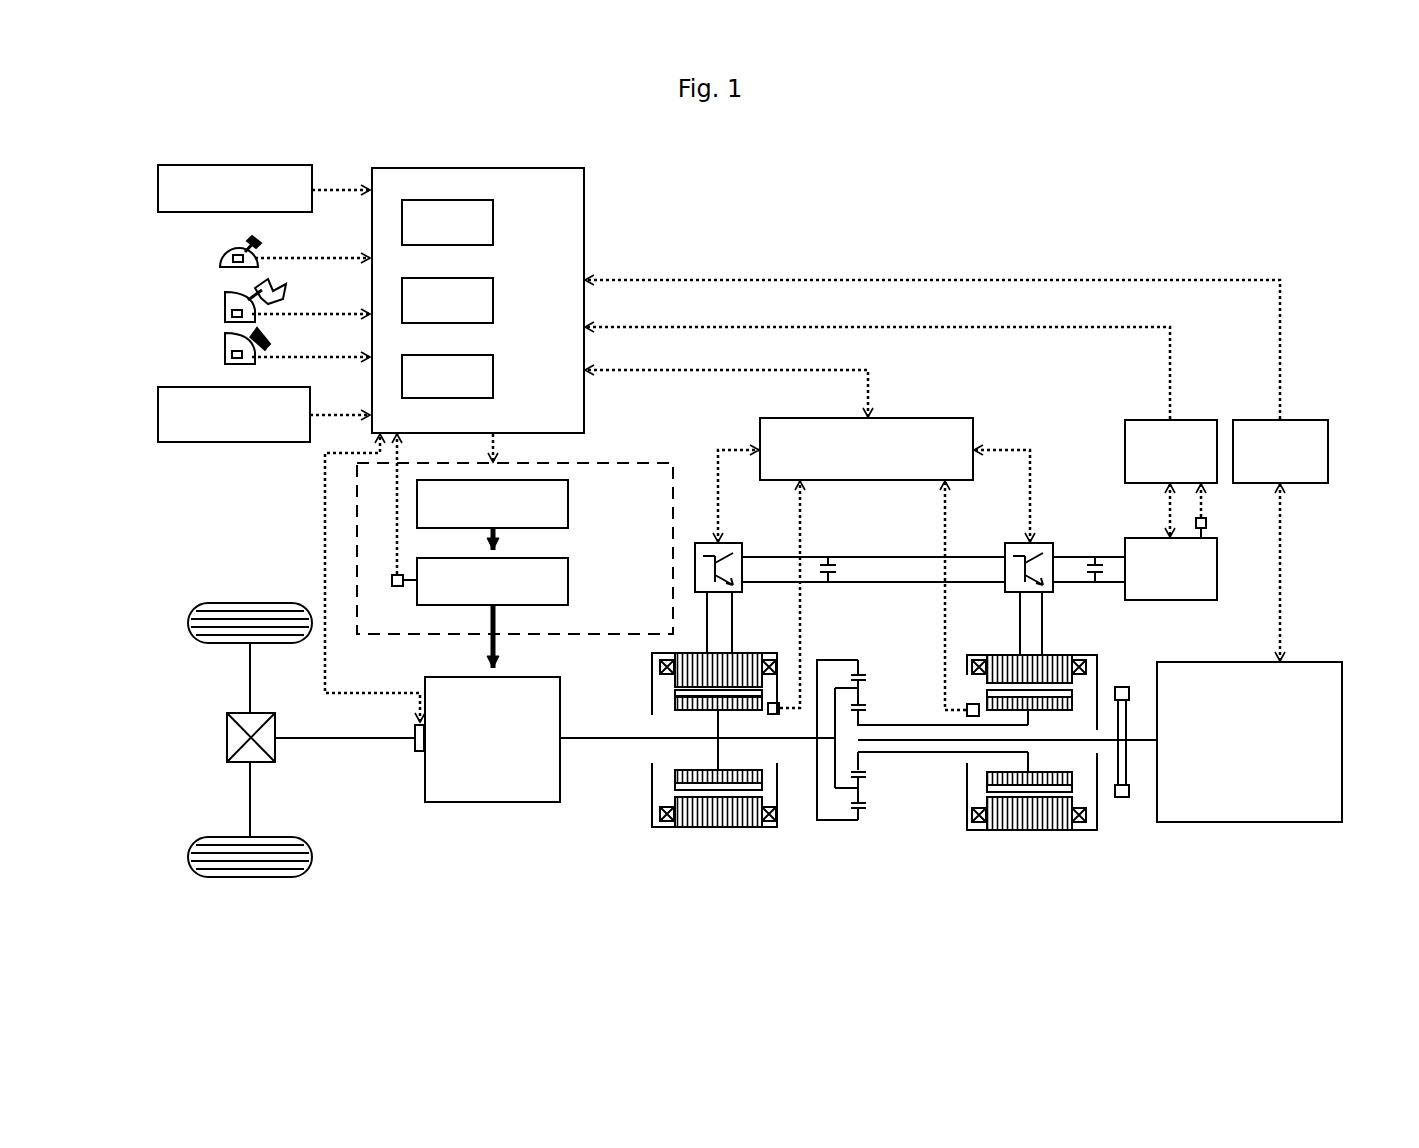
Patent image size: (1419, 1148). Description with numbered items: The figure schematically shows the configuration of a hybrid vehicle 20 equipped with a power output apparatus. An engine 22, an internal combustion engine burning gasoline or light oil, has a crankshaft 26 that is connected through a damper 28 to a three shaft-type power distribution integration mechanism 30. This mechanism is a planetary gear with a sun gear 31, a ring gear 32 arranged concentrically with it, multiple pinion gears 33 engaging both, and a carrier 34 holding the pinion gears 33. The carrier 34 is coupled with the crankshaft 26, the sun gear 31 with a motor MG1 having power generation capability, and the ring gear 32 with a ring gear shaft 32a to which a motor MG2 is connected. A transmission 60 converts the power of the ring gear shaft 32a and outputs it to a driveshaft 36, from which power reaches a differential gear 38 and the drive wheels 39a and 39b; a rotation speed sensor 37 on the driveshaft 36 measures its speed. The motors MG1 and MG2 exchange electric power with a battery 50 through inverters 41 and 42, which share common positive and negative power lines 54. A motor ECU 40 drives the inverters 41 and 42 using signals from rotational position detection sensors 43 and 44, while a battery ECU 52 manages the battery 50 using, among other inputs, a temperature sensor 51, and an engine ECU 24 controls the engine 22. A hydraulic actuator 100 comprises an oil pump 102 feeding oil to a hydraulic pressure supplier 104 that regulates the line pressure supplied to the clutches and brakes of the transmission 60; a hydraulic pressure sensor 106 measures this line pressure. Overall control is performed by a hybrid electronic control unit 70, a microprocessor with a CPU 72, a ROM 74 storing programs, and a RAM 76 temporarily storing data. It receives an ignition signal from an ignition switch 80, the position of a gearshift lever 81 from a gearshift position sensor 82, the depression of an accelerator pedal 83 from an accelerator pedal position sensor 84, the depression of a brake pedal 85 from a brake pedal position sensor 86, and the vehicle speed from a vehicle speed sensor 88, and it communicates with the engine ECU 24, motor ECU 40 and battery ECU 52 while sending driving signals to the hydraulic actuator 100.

The hybrid vehicle 20 is at (1120, 240).
The engine 22 is at (1342, 730).
The engine electronic control unit 24 is at (1300, 420).
The crankshaft 26 is at (1140, 740).
The damper 28 is at (1123, 797).
The power distribution integration mechanism 30 is at (922, 723).
The sun gear 31 is at (863, 758).
The ring gear 32 is at (863, 813).
The ring gear shaft 32a is at (803, 748).
The pinion gears 33 is at (863, 787).
The carrier 34 is at (842, 687).
The driveshaft 36 is at (338, 738).
The rotation speed sensor 37 is at (416, 752).
The differential gear 38 is at (227, 740).
The drive wheel 39a is at (250, 603).
The drive wheel 39b is at (250, 877).
The motor electronic control unit 40 is at (913, 418).
The inverter 41 is at (1053, 543).
The inverter 42 is at (733, 543).
The rotational position detection sensor 43 is at (970, 703).
The rotational position detection sensor 44 is at (774, 702).
The battery 50 is at (1172, 600).
The temperature sensor 51 is at (1208, 523).
The battery electronic control unit 52 is at (1150, 420).
The power lines 54 is at (858, 580).
The transmission 60 is at (493, 802).
The hybrid electronic control unit 70 is at (480, 168).
The CPU 72 is at (495, 225).
The ROM 74 is at (495, 303).
The RAM 76 is at (495, 379).
The ignition switch 80 is at (158, 186).
The gearshift lever 81 is at (250, 243).
The gearshift position sensor 82 is at (236, 262).
The accelerator pedal 83 is at (254, 298).
The accelerator pedal position sensor 84 is at (236, 316).
The brake pedal 85 is at (253, 343).
The brake pedal position sensor 86 is at (236, 358).
The vehicle speed sensor 88 is at (158, 410).
The hydraulic actuator 100 is at (598, 463).
The oil pump 102 is at (570, 508).
The hydraulic pressure supplier 104 is at (570, 586).
The hydraulic pressure sensor 106 is at (397, 586).
The motor MG1 is at (1028, 830).
The motor MG2 is at (720, 827).